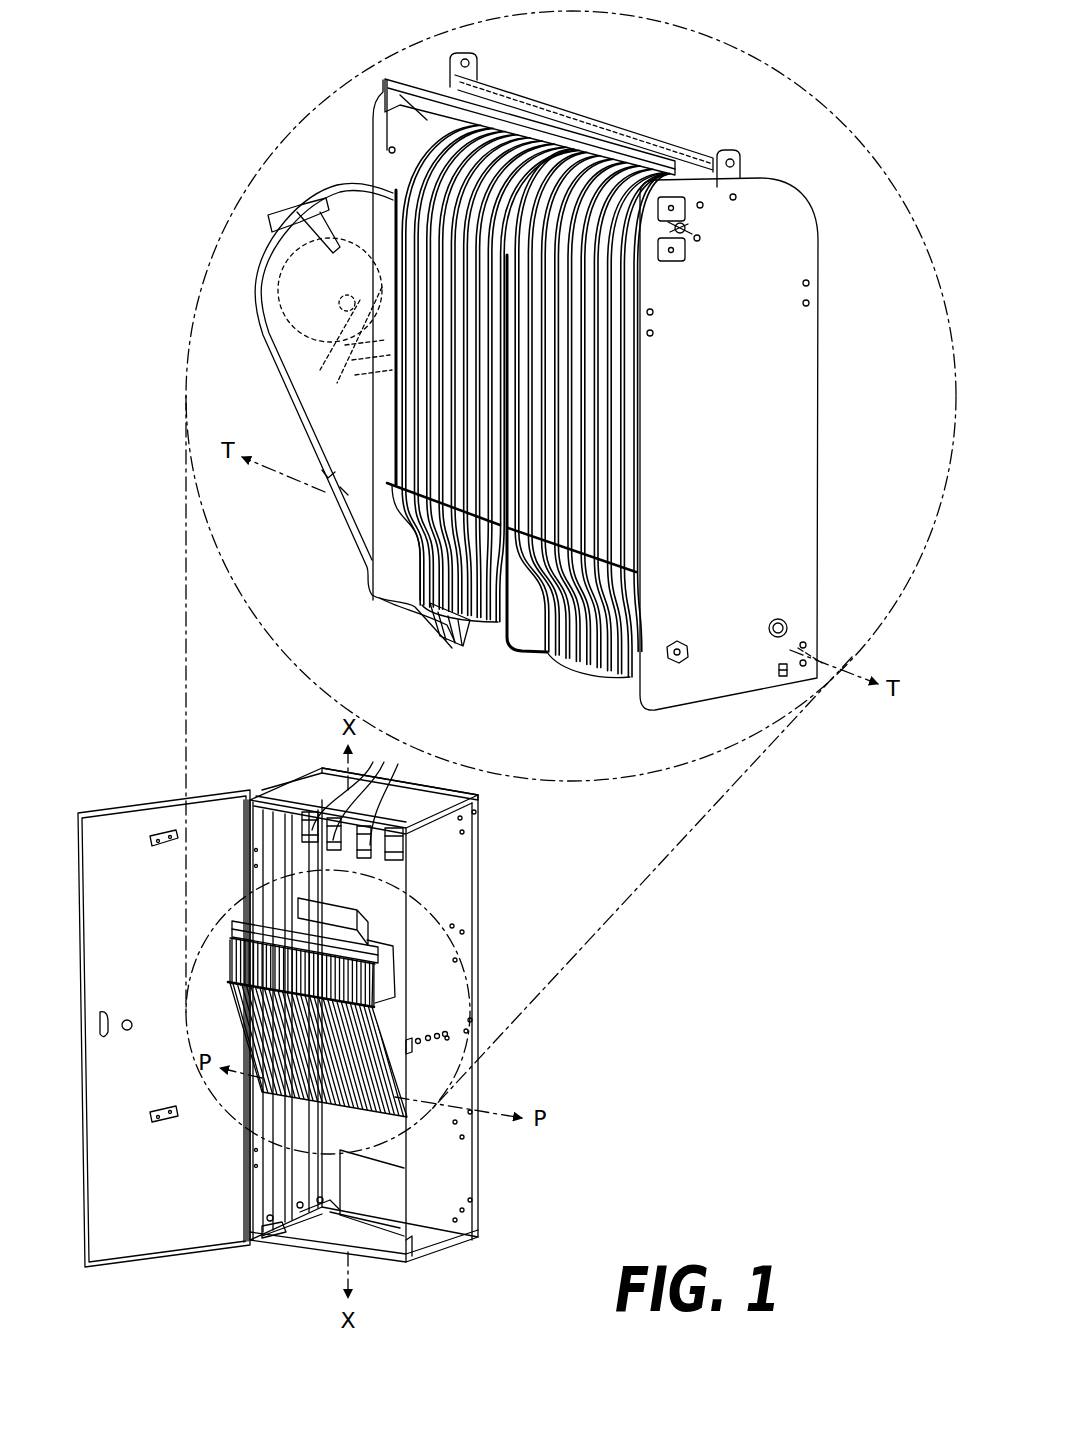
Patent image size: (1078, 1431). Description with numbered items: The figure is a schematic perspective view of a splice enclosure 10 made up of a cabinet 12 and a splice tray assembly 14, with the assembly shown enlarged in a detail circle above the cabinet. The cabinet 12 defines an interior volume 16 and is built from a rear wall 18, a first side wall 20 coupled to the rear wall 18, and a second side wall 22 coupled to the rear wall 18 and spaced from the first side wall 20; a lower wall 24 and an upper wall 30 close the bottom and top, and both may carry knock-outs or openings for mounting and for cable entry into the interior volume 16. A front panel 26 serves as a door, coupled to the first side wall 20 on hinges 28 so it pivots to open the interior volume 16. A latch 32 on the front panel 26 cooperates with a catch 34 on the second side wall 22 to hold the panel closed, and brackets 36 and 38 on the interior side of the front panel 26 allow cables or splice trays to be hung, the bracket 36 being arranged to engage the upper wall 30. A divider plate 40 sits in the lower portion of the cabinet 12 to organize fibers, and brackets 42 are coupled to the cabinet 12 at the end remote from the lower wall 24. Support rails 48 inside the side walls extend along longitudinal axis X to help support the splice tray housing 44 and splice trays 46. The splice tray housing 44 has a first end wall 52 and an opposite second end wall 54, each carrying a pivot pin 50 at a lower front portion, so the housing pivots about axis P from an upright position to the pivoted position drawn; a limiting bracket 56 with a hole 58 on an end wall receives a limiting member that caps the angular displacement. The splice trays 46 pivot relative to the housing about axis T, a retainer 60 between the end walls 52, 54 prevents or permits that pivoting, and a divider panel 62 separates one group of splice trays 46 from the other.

The splice enclosure 10 is at (234, 714).
The cabinet 12 is at (470, 822).
The splice tray assembly 14 is at (300, 93).
The interior volume 16 is at (382, 873).
The rear wall 18 is at (478, 852).
The first side wall 20 is at (243, 832).
The second side wall 22 is at (468, 917).
The lower wall 24 is at (320, 1232).
The front panel 26 is at (100, 832).
The hinges 28 is at (248, 856).
The upper wall 30 is at (290, 792).
The latch 32 is at (103, 1018).
The catch 34 is at (410, 1032).
The bracket 36 is at (165, 844).
The bracket 38 is at (160, 1127).
The divider plate 40 is at (378, 1195).
The brackets 42 is at (352, 796).
The splice tray housing 44 is at (770, 182).
The splice trays 46 is at (445, 372).
The support rails 48 is at (277, 1194).
The pivot pin 50 is at (690, 648).
The first end wall 52 is at (380, 165).
The second end wall 54 is at (808, 243).
The limiting bracket 56 is at (682, 256).
The hole 58 is at (690, 222).
The retainer 60 is at (405, 82).
The divider panel 62 is at (562, 140).